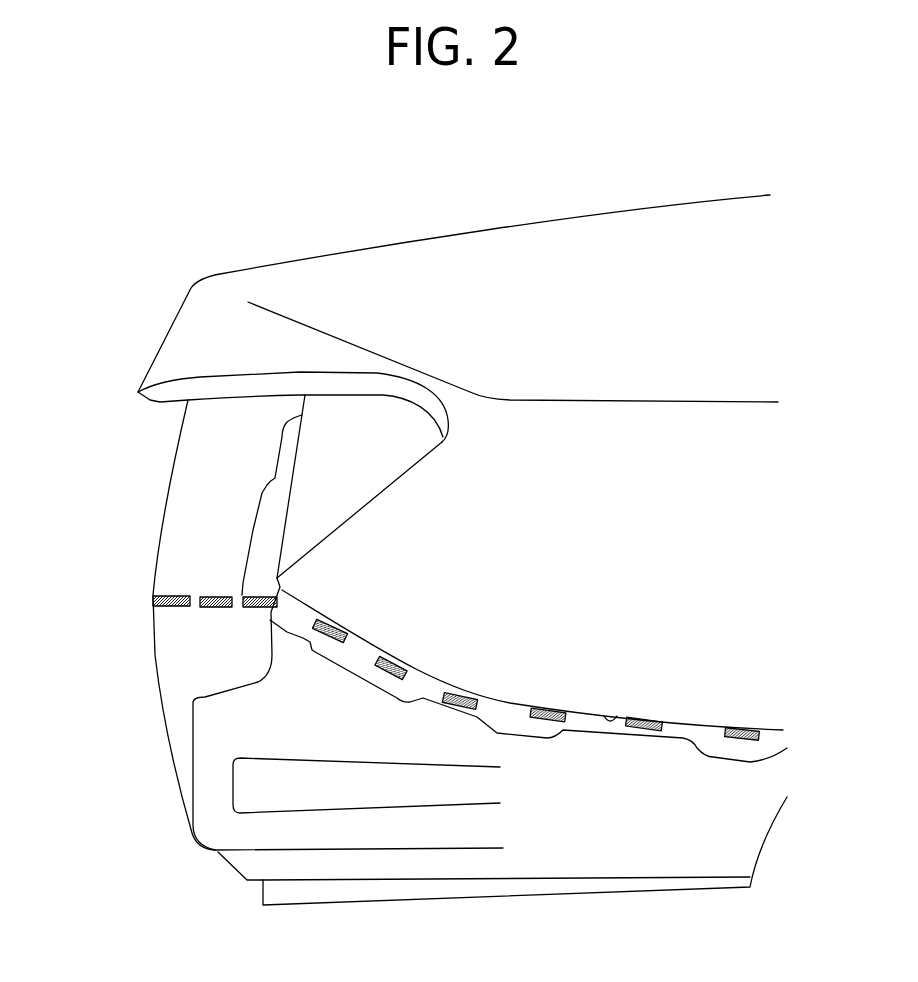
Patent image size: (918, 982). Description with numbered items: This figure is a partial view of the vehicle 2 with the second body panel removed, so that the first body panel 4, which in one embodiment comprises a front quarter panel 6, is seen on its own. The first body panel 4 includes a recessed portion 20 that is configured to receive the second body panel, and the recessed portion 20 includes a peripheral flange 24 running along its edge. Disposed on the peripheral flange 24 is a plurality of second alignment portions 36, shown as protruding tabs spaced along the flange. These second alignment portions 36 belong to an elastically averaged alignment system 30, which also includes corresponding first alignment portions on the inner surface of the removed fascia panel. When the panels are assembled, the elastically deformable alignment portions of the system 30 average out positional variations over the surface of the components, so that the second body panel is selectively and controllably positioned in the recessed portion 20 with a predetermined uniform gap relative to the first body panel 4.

The vehicle 2 is at (140, 234).
The first body panel 4 is at (170, 342).
The front quarter panel 6 is at (433, 547).
The recessed portion 20 is at (733, 867).
The peripheral flange 24 is at (622, 708).
The elastically averaged alignment system 30 is at (585, 777).
The second alignment portion 36 is at (563, 705).